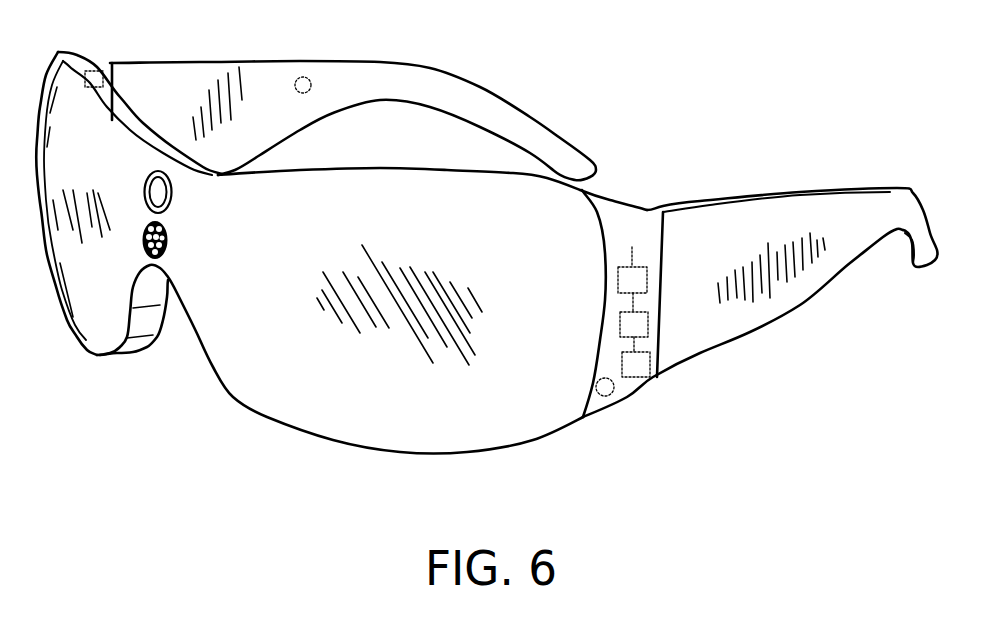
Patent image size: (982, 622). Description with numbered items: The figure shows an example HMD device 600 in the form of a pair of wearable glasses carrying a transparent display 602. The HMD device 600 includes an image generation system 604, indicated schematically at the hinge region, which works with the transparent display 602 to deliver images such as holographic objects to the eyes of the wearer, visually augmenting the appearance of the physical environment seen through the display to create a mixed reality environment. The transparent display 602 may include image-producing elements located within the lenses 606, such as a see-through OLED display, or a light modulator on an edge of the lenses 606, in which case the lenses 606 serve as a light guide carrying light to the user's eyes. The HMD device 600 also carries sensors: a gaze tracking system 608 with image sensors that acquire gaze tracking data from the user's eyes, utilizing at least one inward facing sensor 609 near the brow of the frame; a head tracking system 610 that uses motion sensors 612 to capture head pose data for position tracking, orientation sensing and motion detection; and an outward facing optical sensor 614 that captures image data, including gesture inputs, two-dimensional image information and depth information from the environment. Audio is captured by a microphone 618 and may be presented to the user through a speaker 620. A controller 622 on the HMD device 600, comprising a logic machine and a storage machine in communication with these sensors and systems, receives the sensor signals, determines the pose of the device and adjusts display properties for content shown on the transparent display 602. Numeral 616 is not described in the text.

The HMD device 600 is at (545, 42).
The transparent display 602 is at (267, 380).
The image generation system 604 is at (633, 222).
The lenses 606 is at (137, 323).
The gaze tracking system 608 is at (646, 279).
The inward facing sensor 609 is at (211, 166).
The head tracking system 610 is at (647, 322).
The motion sensors 612 is at (648, 356).
The optical sensor 614 is at (186, 198).
The speaker 616 is at (179, 249).
The microphone 618 is at (618, 402).
The speaker 620 is at (309, 62).
The controller 622 is at (97, 56).